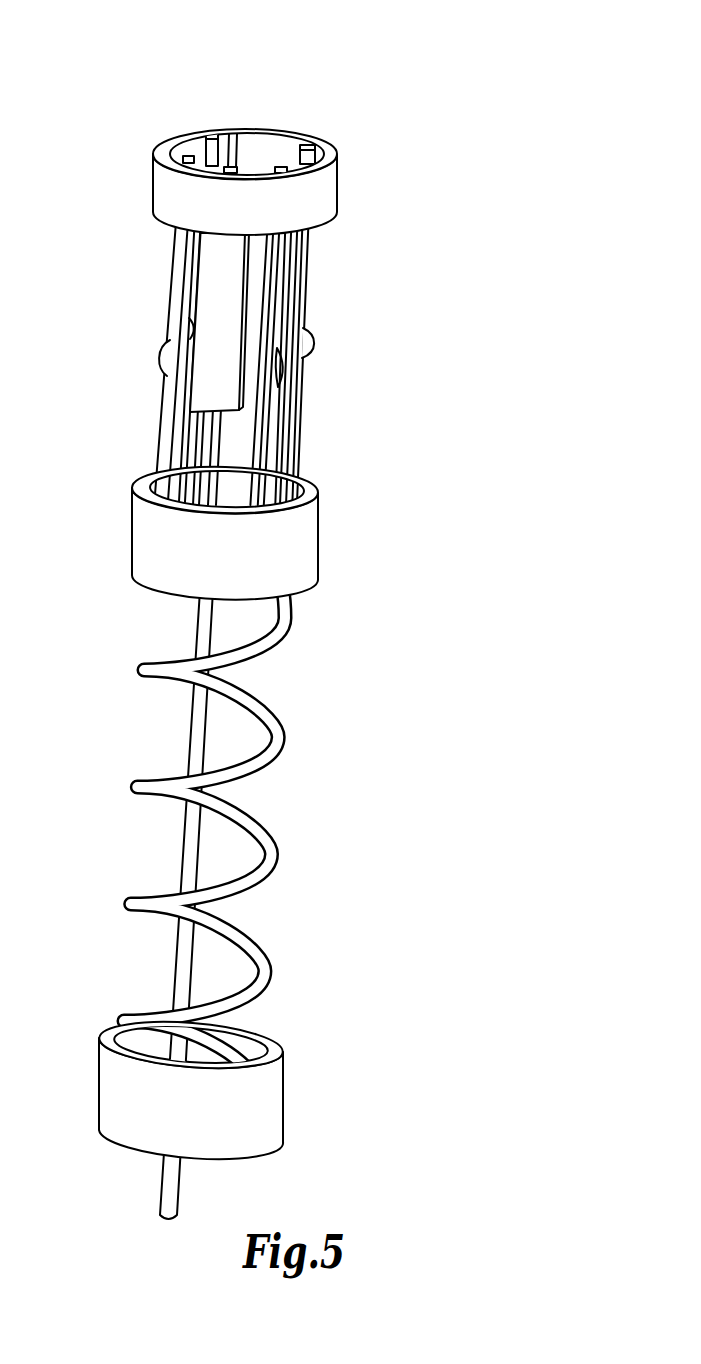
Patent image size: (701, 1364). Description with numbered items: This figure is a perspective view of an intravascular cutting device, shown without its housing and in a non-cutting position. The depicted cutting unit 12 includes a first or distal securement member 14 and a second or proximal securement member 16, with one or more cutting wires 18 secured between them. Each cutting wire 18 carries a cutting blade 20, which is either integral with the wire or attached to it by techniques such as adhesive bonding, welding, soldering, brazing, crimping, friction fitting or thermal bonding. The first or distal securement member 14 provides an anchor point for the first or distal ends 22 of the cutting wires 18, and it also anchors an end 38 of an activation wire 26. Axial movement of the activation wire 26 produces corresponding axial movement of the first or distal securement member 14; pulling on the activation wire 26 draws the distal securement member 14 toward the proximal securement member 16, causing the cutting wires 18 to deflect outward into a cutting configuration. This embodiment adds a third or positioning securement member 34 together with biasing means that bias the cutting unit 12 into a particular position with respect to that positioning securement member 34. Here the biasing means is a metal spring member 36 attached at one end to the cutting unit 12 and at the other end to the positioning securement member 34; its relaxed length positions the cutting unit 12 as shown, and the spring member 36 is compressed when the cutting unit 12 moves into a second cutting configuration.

The cutting unit 12 is at (314, 614).
The first or distal securement member 14 is at (325, 193).
The second or proximal securement member 16 is at (293, 558).
The cutting wire 18 is at (178, 262).
The cutting blade 20 is at (188, 325).
The first or distal end 22 is at (213, 137).
The activation wire 26 is at (170, 1190).
The third or positioning securement member 34 is at (252, 1103).
The spring member 36 is at (278, 735).
The end of activation wire 38 is at (230, 168).